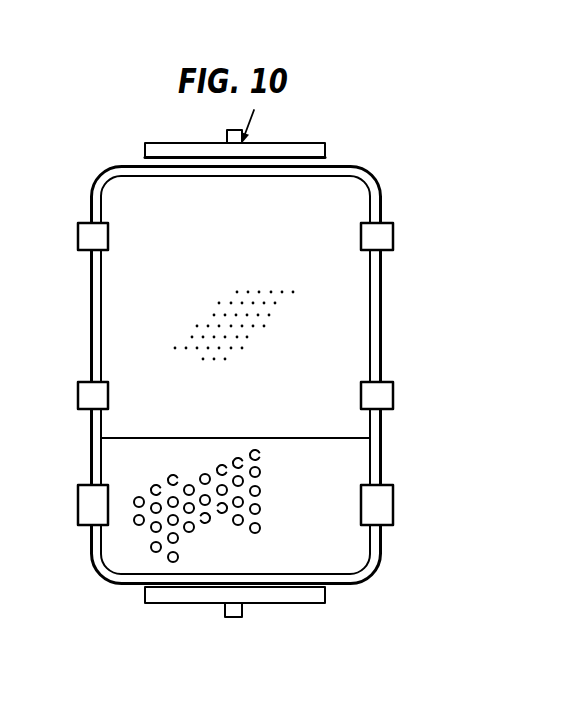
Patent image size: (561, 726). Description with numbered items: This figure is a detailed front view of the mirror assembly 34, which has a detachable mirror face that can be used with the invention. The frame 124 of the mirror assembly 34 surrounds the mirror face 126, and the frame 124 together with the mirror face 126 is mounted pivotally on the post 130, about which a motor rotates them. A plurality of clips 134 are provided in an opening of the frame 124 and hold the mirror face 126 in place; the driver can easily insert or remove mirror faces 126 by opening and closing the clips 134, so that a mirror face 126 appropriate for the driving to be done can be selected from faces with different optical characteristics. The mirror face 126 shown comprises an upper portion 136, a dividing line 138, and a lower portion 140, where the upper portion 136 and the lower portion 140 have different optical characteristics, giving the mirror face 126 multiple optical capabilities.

The mirror assembly 34 is at (372, 133).
The frame 124 is at (101, 168).
The mirror face 126 is at (112, 294).
The post 130 is at (232, 618).
The clips 134 is at (402, 237).
The upper portion 136 is at (343, 296).
The dividing line 138 is at (282, 430).
The lower portion 140 is at (270, 534).